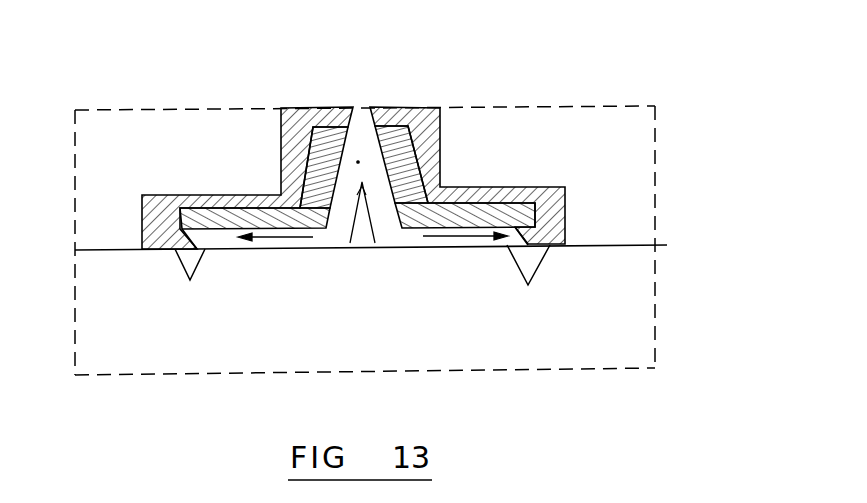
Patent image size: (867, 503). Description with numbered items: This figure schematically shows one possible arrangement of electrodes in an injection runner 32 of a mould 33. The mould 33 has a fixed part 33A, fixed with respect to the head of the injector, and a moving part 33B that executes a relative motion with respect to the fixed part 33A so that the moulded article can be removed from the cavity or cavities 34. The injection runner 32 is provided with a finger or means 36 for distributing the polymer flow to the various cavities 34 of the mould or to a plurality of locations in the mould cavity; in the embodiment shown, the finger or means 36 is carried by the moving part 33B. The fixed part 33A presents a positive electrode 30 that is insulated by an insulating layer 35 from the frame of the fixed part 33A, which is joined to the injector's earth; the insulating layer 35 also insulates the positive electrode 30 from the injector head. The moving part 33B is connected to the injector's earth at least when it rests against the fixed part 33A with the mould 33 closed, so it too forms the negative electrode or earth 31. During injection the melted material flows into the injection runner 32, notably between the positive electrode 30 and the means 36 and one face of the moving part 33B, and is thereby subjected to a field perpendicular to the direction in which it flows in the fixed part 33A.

The positive electrode 30 is at (298, 168).
The negative electrode or earth 31 is at (652, 210).
The injection runner 32 is at (365, 208).
The mould 33 is at (60, 195).
The fixed part 33A is at (658, 109).
The moving part 33B is at (660, 364).
The cavities 34 is at (493, 277).
The insulating layer 35 is at (444, 137).
The finger or means for distributing the polymer flow 36 is at (360, 240).